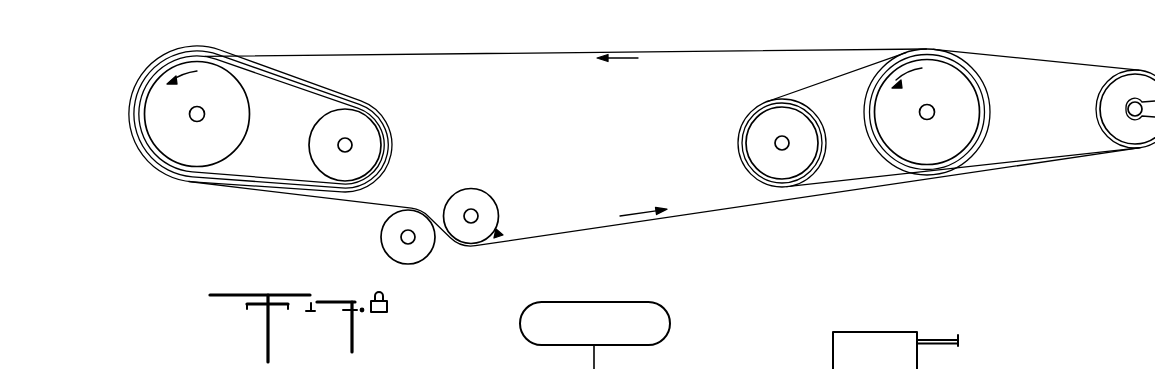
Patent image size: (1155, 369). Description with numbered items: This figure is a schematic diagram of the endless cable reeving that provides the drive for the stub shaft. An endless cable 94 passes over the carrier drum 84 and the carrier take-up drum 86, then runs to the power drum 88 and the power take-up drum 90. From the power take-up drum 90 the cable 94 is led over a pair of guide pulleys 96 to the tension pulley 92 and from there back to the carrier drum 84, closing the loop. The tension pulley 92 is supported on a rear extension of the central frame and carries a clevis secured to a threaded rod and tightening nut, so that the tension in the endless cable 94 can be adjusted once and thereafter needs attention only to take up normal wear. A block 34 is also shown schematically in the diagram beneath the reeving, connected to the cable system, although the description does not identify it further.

The control unit block 34 is at (586, 333).
The carrier drum 84 is at (894, 139).
The carrier take-up drum 86 is at (805, 122).
The power drum 88 is at (243, 106).
The power take-up drum 90 is at (313, 141).
The tension pulley 92 is at (1101, 116).
The cable 94 is at (624, 50).
The guide pulleys 96 is at (468, 237).